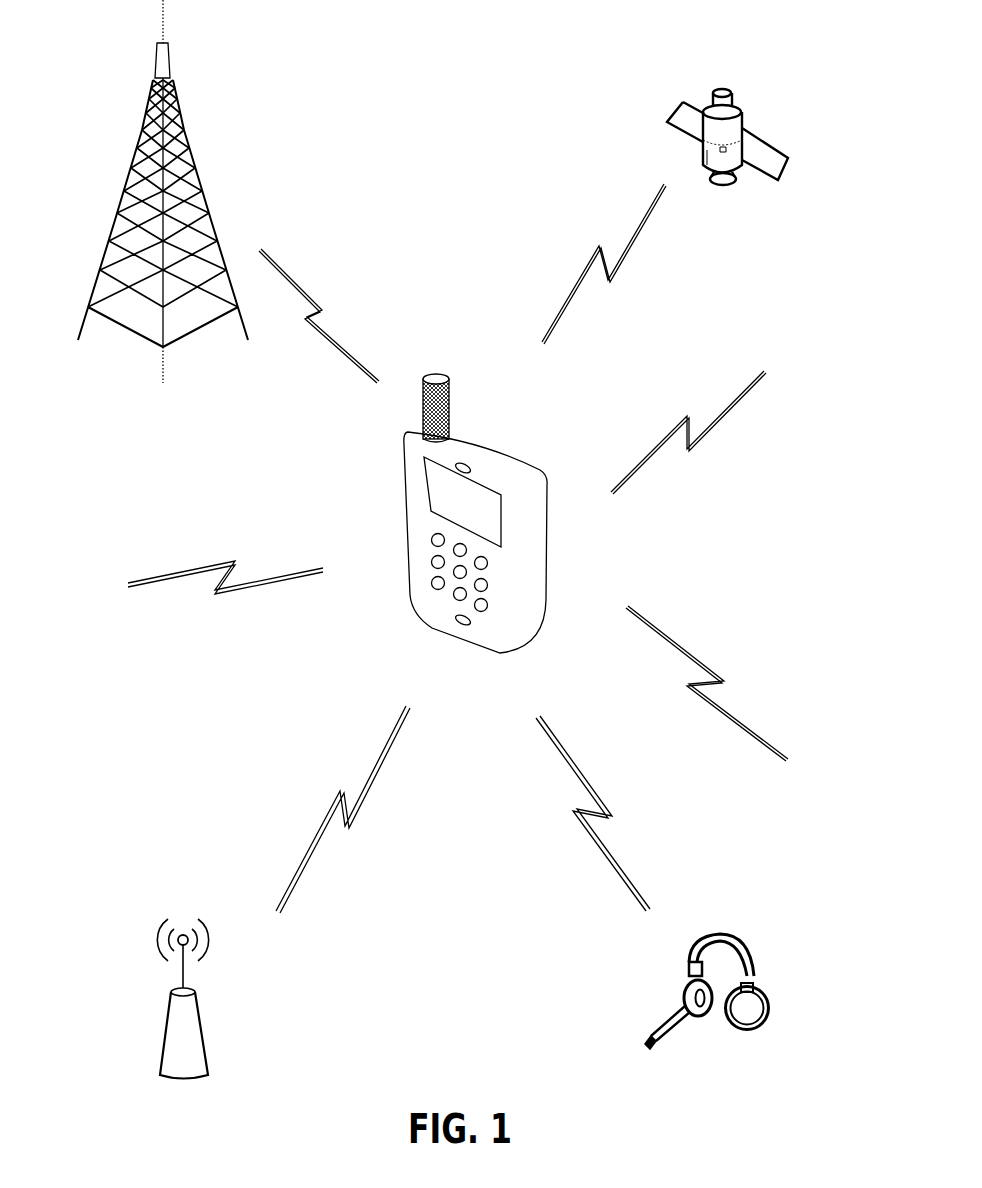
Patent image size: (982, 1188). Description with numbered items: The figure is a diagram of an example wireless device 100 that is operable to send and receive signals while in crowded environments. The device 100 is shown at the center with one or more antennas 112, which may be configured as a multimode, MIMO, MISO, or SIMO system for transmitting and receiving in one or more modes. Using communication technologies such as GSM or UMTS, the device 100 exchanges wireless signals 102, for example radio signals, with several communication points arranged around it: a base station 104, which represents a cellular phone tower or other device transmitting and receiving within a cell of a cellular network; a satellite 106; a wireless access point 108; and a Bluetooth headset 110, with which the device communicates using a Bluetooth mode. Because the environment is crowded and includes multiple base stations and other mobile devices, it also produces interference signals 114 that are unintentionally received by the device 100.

The wireless device 100 is at (473, 457).
The wireless signals 102 is at (306, 296).
The base station 104 is at (148, 110).
The satellite 106 is at (680, 98).
The wireless access point 108 is at (160, 1062).
The Bluetooth headset 110 is at (658, 1027).
The antennas 112 is at (445, 377).
The interference signals 114 is at (668, 438).